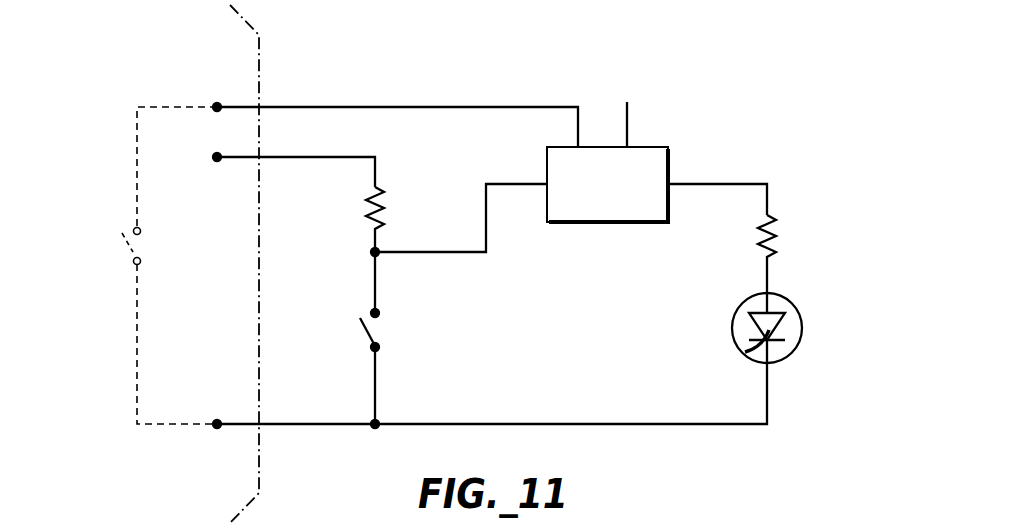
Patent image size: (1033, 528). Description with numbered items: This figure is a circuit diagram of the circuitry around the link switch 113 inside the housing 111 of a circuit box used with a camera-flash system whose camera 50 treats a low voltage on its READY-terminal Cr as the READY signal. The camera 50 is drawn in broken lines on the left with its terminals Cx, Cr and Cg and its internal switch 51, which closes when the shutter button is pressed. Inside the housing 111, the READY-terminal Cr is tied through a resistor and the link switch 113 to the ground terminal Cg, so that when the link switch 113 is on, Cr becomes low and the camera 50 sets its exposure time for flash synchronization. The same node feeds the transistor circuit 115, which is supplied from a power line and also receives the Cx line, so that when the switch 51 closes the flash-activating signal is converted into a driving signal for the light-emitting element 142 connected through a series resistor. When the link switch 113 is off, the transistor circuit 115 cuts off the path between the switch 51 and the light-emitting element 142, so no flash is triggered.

The camera 50 is at (173, 80).
The switch 51 is at (145, 246).
The housing 111 is at (496, 70).
The link switch 113 is at (382, 329).
The transistor circuit 115 is at (655, 145).
The light-emitting element 142 is at (732, 328).